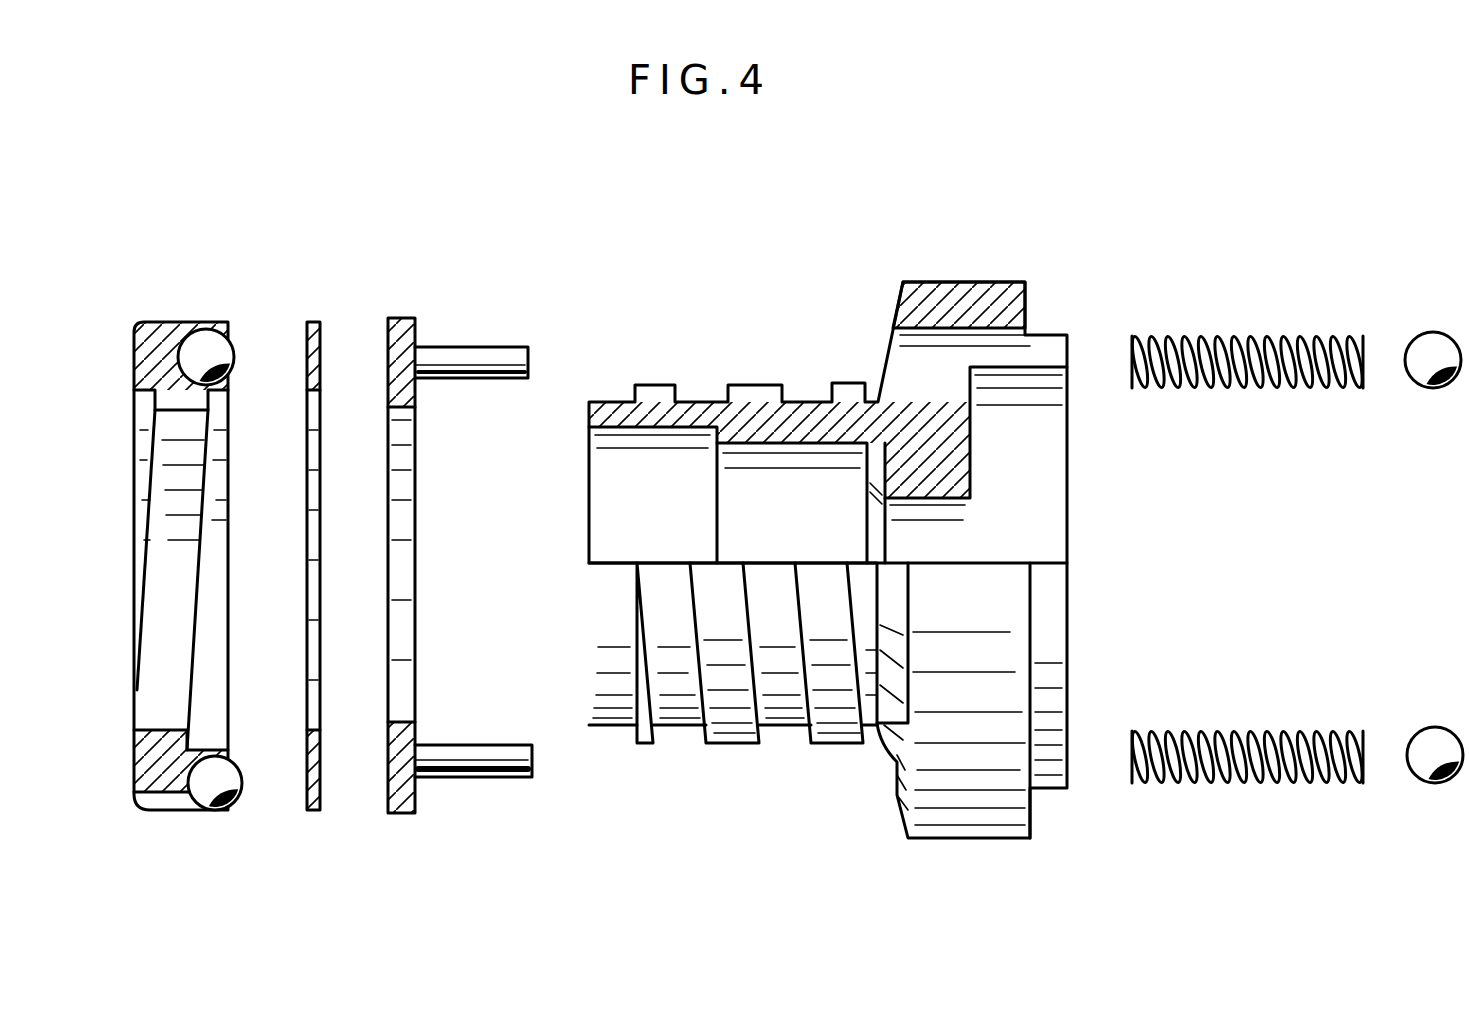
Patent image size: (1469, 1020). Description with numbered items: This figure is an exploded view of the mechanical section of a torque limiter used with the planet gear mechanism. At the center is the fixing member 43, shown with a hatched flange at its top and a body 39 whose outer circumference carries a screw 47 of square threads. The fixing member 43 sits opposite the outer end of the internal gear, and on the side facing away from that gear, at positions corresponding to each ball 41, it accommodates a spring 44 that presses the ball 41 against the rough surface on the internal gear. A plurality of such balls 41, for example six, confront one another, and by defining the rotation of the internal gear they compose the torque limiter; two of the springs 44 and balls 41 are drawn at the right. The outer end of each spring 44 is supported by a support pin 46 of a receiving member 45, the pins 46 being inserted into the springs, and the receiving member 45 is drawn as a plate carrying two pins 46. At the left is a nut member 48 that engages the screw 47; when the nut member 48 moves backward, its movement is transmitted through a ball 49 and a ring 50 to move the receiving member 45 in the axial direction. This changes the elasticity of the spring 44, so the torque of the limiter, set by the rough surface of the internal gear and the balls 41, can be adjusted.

The cylinder body 39 is at (910, 363).
The ball 41 is at (1427, 387).
The fixing member 43 is at (967, 292).
The spring 44 is at (1233, 388).
The receiving member 45 is at (403, 340).
The support pin 46 is at (477, 367).
The screw 47 is at (732, 745).
The nut member 48 is at (158, 333).
The ball 49 is at (217, 347).
The ring 50 is at (320, 320).